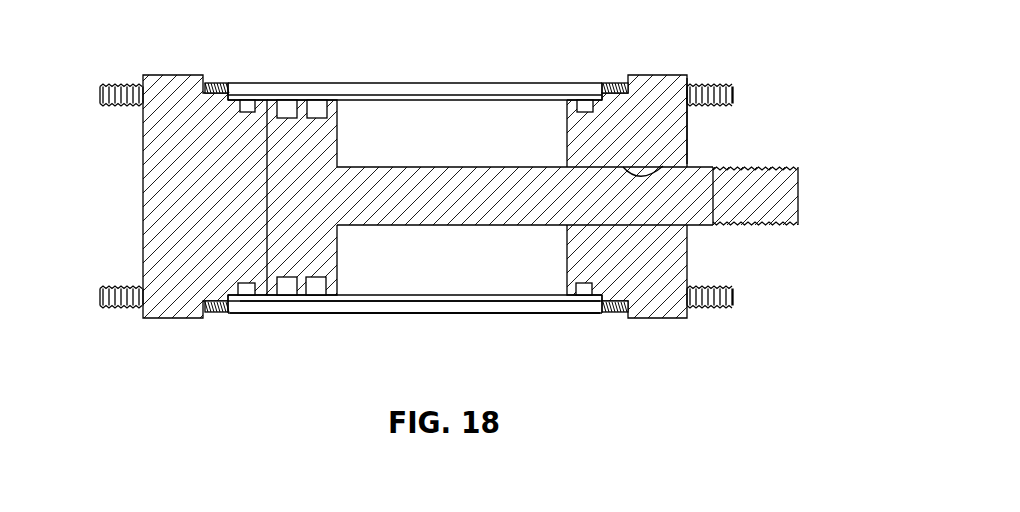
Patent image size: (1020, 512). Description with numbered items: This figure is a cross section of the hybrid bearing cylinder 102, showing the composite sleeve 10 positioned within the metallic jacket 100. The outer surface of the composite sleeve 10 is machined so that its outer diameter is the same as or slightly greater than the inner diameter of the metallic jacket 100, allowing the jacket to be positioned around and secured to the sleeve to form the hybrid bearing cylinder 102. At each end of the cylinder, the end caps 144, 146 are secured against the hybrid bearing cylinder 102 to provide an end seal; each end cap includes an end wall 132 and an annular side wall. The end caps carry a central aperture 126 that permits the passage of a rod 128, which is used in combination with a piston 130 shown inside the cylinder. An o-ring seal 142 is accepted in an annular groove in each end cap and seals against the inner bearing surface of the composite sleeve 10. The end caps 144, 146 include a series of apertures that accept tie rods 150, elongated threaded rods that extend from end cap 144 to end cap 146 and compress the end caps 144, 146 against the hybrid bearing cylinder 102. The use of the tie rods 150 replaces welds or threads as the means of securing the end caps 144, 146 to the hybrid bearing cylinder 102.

The composite sleeve 10 is at (525, 313).
The metallic jacket 100 is at (393, 313).
The hybrid bearing cylinder 102 is at (320, 324).
The central aperture 126 is at (688, 133).
The rod 128 is at (535, 177).
The piston 130 is at (330, 137).
The end wall 132 is at (687, 245).
The o-ring seal 142 is at (248, 97).
The end cap 144 is at (631, 76).
The end cap 146 is at (175, 76).
The tie rods 150 is at (719, 320).